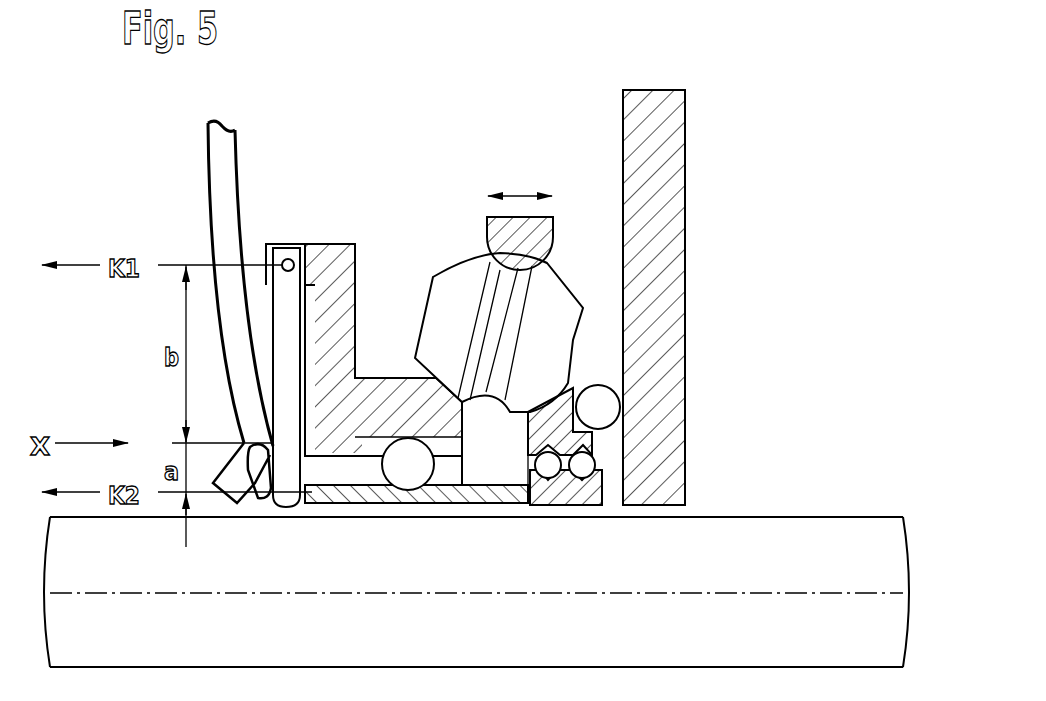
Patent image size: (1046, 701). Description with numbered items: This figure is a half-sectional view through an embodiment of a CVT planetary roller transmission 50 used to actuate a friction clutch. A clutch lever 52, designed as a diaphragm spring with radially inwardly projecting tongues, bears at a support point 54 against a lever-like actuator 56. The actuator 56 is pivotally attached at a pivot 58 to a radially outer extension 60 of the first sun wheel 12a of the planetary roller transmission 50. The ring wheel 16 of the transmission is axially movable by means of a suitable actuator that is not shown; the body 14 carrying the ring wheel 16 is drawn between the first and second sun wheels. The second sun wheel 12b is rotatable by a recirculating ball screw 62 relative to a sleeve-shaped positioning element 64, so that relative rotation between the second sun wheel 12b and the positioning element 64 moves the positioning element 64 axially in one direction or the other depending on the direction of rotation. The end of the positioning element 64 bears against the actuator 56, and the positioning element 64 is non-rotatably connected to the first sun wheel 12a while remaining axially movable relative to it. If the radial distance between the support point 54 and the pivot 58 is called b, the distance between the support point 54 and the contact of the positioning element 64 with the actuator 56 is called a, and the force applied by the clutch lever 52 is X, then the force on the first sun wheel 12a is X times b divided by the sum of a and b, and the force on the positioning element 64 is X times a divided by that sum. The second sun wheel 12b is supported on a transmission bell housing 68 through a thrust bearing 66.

The first sun wheel 12a is at (392, 378).
The second sun wheel 12b is at (580, 430).
The piston body 14 is at (452, 283).
The ring wheel 16 is at (488, 232).
The planetary roller transmission 50 is at (587, 284).
The clutch lever 52 is at (223, 163).
The support point 54 is at (258, 497).
The actuator 56 is at (290, 300).
The pivot 58 is at (281, 252).
The radially outer extension 60 is at (325, 243).
The recirculating ball screw 62 is at (548, 468).
The positioning element 64 is at (360, 490).
The thrust bearing 66 is at (607, 410).
The transmission bell housing 68 is at (670, 272).